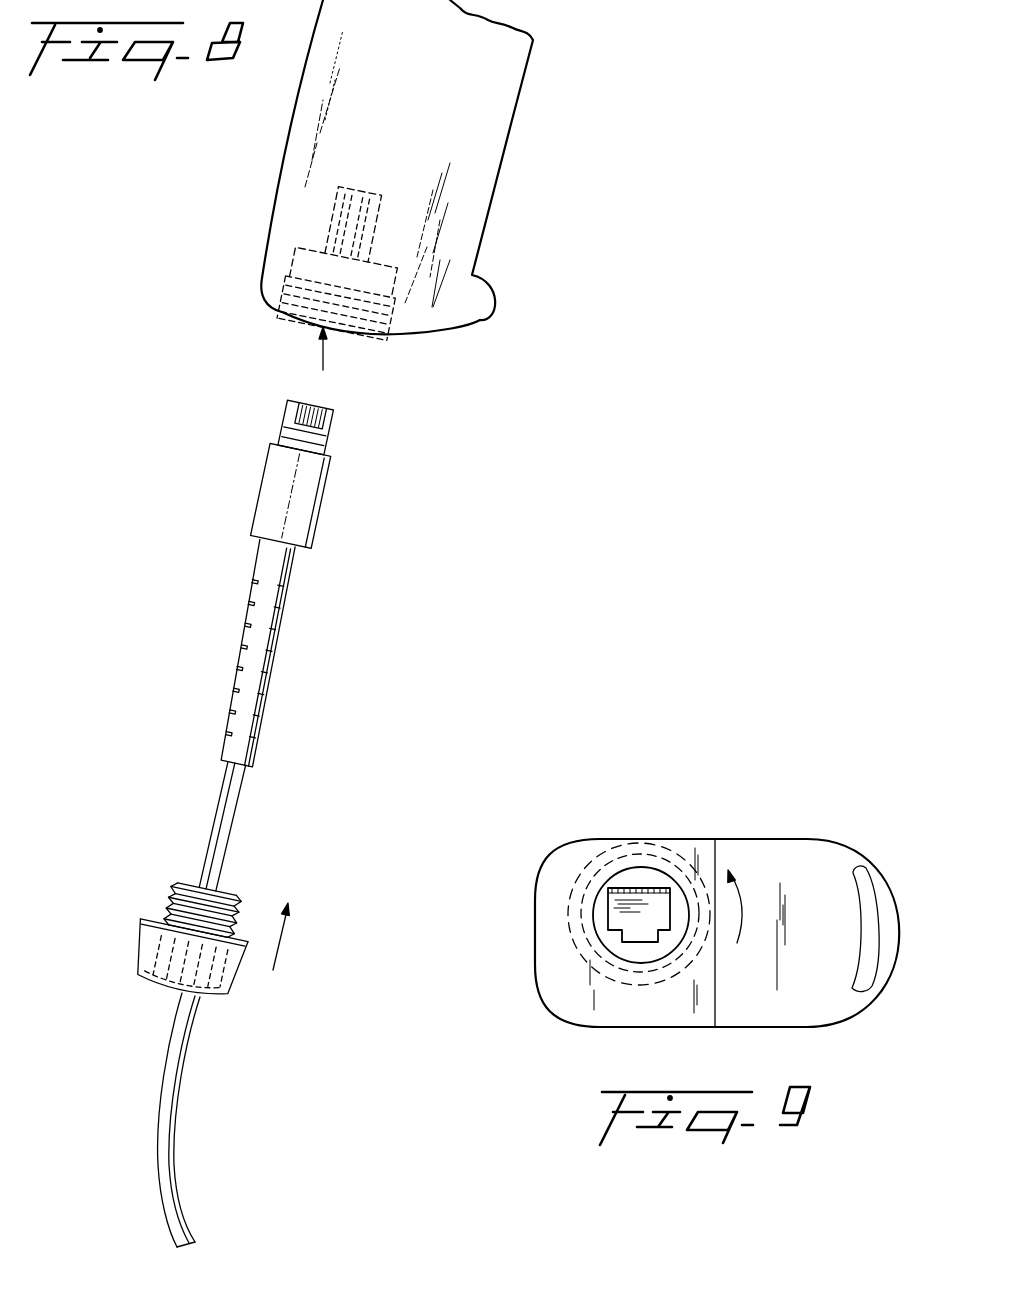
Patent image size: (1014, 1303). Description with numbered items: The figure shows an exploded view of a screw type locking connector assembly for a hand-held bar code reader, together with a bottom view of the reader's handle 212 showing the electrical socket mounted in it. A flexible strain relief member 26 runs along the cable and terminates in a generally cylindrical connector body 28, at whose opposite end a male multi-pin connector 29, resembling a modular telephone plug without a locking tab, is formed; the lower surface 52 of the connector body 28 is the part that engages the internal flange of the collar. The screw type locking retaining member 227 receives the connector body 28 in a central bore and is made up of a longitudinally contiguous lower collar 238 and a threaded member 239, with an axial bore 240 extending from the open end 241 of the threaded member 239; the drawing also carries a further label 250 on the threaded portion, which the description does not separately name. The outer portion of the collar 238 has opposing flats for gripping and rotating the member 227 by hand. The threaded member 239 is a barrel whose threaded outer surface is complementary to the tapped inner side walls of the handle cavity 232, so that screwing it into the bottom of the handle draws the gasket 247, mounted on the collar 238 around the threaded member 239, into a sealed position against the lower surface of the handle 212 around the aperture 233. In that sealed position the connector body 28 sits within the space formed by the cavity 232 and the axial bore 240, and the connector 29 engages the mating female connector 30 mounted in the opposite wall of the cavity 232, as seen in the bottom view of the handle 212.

In FIG. 8, the handle 212 is at (512, 182).
In FIG. 8, the female connector 30 is at (327, 225).
In FIG. 9, the female connector 30 is at (612, 913).
In FIG. 8, the handle cavity 232 is at (290, 320).
In FIG. 9, the handle cavity 232 is at (618, 880).
In FIG. 8, the aperture 233 is at (380, 333).
In FIG. 9, the aperture 233 is at (650, 877).
In FIG. 8, the male multi-pin connector 29 is at (322, 418).
In FIG. 8, the connector body 28 is at (306, 493).
In FIG. 8, the lower surface 52 is at (307, 553).
In FIG. 8, the flexible strain relief member 26 is at (273, 663).
In FIG. 8, the axial bore 240 is at (192, 888).
In FIG. 8, the threaded member 239 is at (238, 896).
In FIG. 8, the open end 241 is at (240, 877).
In FIG. 8, the thread direction 250 is at (248, 911).
In FIG. 8, the gasket 247 is at (153, 920).
In FIG. 8, the lower collar 238 is at (227, 998).
In FIG. 8, the screw type locking retaining member 227 is at (118, 950).